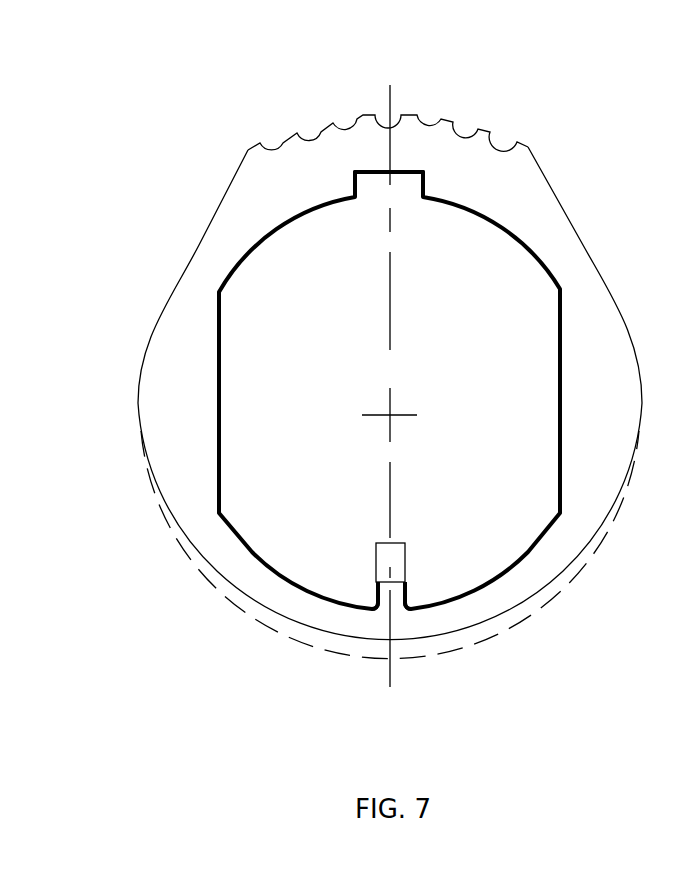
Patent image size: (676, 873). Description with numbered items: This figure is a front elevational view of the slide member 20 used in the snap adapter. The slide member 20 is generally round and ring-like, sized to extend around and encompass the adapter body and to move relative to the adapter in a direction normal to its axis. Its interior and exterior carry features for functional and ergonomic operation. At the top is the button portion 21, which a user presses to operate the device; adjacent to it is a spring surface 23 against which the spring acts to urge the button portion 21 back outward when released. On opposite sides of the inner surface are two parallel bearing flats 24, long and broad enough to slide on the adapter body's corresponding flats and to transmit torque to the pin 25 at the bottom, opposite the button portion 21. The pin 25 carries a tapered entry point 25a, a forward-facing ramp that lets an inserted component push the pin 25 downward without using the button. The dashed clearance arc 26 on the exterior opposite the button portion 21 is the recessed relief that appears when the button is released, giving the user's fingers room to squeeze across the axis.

The slide member 20 is at (190, 303).
The button portion 21 is at (327, 124).
The spring surface 23 is at (400, 180).
The bearing flats 24 is at (220, 327).
The pin 25 is at (368, 602).
The tapered entry point 25a is at (387, 560).
The clearance arc 26 is at (522, 632).